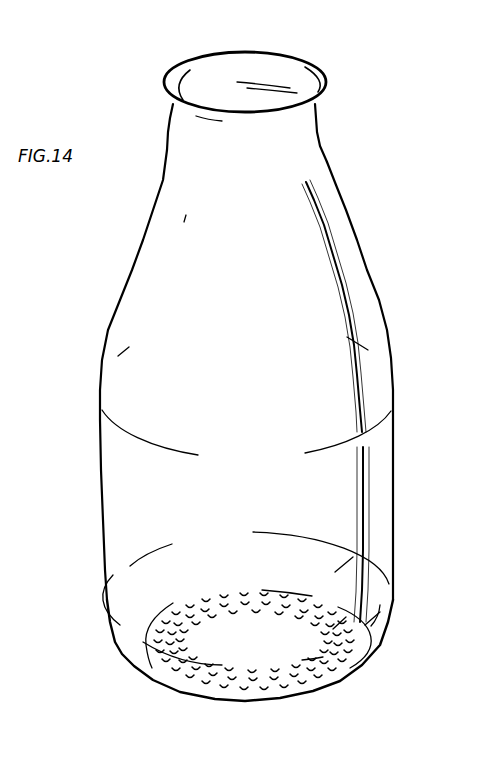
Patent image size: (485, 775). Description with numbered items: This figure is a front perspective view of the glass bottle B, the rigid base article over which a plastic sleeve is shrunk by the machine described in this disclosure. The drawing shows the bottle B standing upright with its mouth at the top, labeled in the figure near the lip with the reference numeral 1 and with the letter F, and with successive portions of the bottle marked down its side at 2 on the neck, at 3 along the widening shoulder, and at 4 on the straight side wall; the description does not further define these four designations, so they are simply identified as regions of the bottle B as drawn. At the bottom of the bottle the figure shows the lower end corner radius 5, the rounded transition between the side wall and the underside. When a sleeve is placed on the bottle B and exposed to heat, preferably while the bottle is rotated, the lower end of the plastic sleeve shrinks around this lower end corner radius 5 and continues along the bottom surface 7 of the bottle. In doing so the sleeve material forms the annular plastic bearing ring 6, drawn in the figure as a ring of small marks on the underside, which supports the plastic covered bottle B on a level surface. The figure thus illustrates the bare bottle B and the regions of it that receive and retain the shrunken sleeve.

The bottle 1 is at (249, 62).
The finish F is at (328, 86).
The neck 2 is at (320, 130).
The shoulder 3 is at (345, 209).
The glass bottle B is at (350, 268).
The body side wall 4 is at (393, 458).
The lower end corner radius 5 is at (372, 656).
The annular plastic bearing ring 6 is at (305, 676).
The bottom surface 7 is at (232, 650).